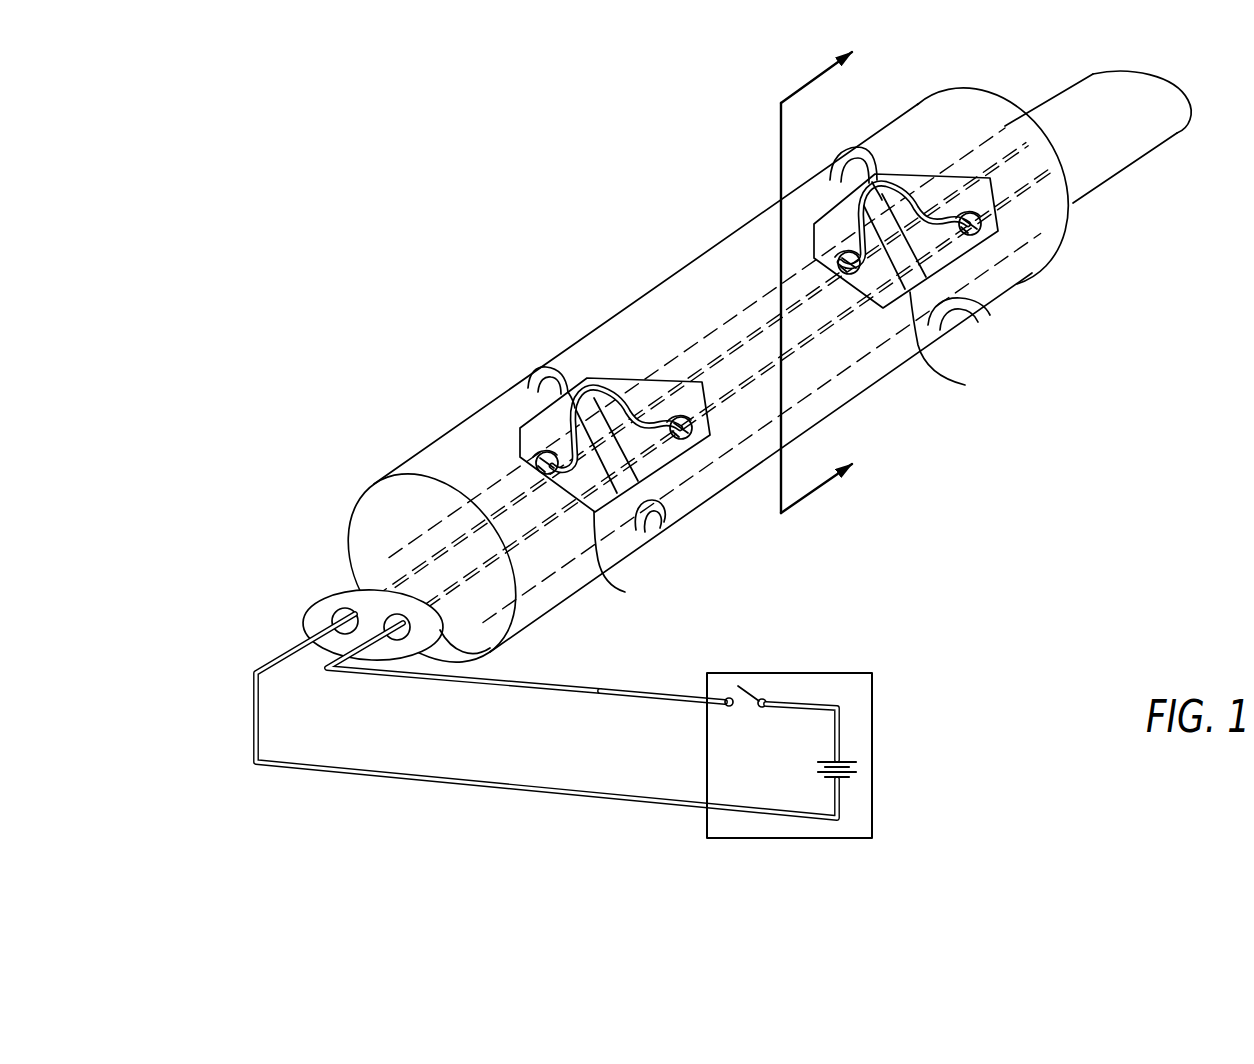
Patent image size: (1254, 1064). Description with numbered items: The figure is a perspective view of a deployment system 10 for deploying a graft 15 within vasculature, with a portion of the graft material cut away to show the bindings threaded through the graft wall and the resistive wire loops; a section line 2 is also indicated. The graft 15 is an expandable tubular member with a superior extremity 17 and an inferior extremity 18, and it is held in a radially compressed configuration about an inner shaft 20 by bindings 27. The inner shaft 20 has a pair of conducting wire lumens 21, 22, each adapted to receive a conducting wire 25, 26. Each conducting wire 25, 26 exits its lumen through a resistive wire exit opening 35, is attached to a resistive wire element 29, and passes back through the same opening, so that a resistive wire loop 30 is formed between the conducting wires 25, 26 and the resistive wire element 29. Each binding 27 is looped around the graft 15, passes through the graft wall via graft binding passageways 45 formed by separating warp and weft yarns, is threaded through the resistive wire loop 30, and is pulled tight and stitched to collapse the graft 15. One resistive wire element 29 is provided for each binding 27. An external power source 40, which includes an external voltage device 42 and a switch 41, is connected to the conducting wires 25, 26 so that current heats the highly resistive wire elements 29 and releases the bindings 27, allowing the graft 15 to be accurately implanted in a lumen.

The section line 2- 2 is at (830, 271).
The deployment system 10 is at (545, 185).
The graft 15 is at (634, 262).
The superior extremity 17 is at (314, 496).
The inferior extremity 18 is at (1010, 72).
The inner shaft 20 is at (320, 586).
The conducting wire lumen 21 is at (334, 616).
The conducting wire lumen 22 is at (400, 640).
The conducting wire 25 is at (373, 801).
The conducting wire 26 is at (667, 681).
The binding 27 is at (531, 349).
The resistive wire element 29 is at (792, 448).
The resistive wire loop 30 is at (590, 386).
The resistive wire exit opening 35 is at (535, 470).
The external power source 40 is at (828, 739).
The switch 41 is at (752, 692).
The external voltage device 42 is at (858, 770).
The graft binding passageway 45 is at (522, 380).